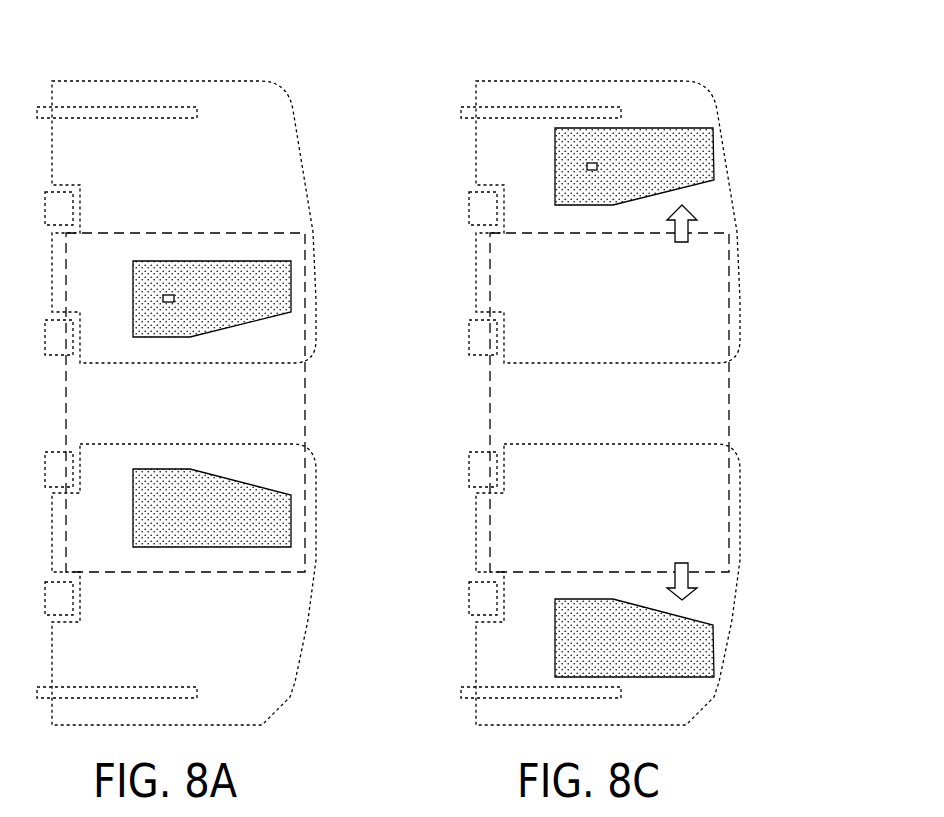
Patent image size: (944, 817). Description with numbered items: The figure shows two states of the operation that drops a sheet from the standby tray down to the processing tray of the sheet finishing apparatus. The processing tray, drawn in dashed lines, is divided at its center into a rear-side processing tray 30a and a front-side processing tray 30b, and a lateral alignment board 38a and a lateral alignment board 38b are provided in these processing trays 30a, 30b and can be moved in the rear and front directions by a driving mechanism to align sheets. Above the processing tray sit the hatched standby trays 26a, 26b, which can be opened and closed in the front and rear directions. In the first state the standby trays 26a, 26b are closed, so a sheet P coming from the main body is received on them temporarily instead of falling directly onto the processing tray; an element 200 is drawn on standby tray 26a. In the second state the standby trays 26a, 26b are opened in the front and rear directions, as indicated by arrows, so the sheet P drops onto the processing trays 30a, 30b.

In FIG. 8A, the lateral alignment board 38a is at (110, 107).
In FIG. 8C, the lateral alignment board 38a is at (533, 107).
In FIG. 8A, the lateral alignment board 38b is at (170, 687).
In FIG. 8A, the processing tray 30a is at (287, 134).
In FIG. 8C, the processing tray 30a is at (692, 88).
In FIG. 8A, the processing tray 30b is at (310, 621).
In FIG. 8C, the processing tray 30b is at (725, 582).
In FIG. 8A, the sensor element 200 is at (174, 296).
In FIG. 8C, the sensor element 200 is at (597, 163).
In FIG. 8A, the standby tray 26a is at (291, 285).
In FIG. 8C, the standby tray 26a is at (714, 155).
In FIG. 8A, the standby tray 26b is at (291, 522).
In FIG. 8C, the standby tray 26b is at (714, 652).
In FIG. 8A, the sheet P is at (305, 392).
In FIG. 8C, the sheet P is at (729, 392).